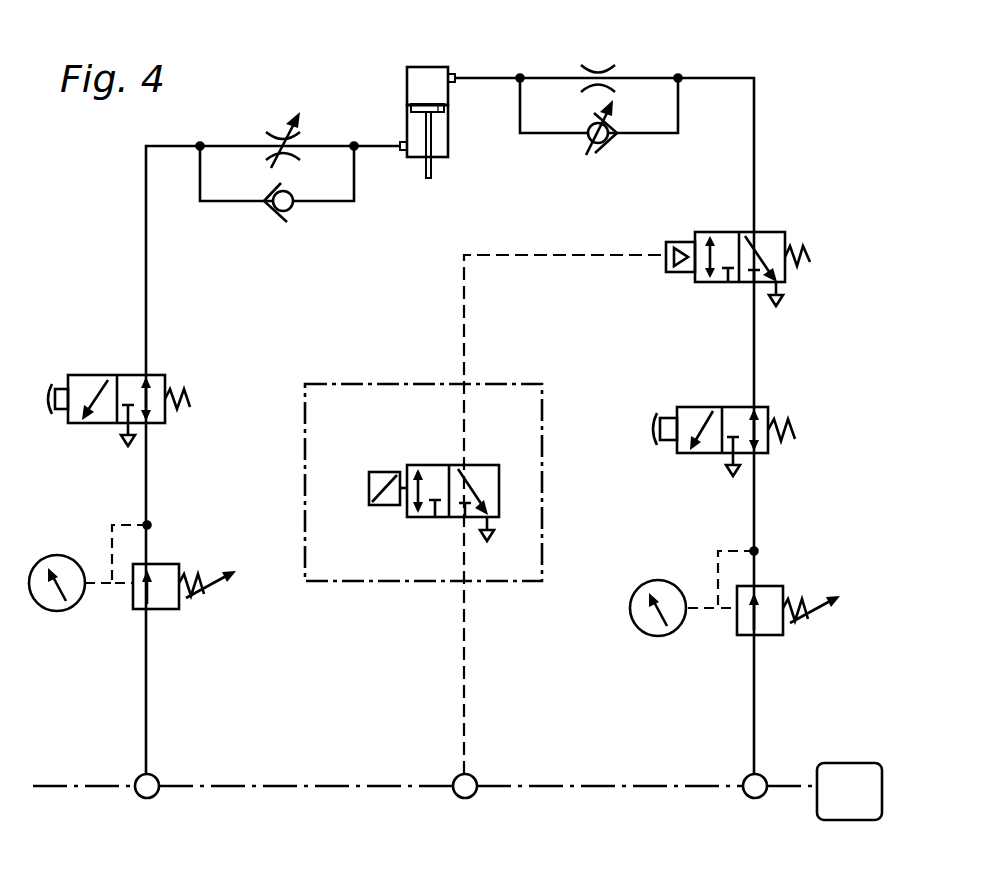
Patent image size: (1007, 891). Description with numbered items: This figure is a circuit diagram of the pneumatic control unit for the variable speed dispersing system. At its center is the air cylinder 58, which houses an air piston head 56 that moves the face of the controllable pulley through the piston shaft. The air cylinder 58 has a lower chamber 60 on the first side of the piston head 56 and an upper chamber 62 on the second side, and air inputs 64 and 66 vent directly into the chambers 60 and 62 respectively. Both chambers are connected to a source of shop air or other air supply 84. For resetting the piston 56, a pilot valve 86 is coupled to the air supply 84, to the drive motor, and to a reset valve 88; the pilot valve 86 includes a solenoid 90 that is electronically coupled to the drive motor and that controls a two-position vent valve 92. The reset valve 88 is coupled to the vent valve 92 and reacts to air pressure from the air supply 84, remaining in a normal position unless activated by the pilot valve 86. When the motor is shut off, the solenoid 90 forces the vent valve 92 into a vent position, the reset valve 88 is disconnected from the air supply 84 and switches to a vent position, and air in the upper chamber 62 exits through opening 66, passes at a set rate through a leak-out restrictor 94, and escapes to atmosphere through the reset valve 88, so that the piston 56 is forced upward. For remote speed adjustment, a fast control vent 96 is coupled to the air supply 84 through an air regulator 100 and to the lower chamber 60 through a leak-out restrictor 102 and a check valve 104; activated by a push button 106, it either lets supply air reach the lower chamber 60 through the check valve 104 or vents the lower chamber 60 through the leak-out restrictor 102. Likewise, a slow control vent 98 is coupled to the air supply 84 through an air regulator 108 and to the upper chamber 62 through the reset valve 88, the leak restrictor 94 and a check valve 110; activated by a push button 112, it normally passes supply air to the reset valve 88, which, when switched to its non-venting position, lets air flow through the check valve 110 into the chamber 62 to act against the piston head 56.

The air piston head 56 is at (412, 108).
The air cylinder 58 is at (450, 158).
The lower chamber 60 is at (449, 137).
The upper chamber 62 is at (414, 80).
The air input 64 is at (401, 152).
The air input 66 is at (462, 70).
The air supply 84 is at (847, 763).
The pilot valve 86 is at (410, 384).
The reset valve 88 is at (719, 232).
The solenoid 90 is at (381, 474).
The two-position vent valve 92 is at (433, 465).
The leak-out restrictor 94 is at (590, 68).
The fast control vent 96 is at (93, 375).
The slow control vent 98 is at (766, 407).
The air regulator 100 is at (85, 552).
The leak-out restrictor 102 is at (273, 138).
The check valve 104 is at (290, 210).
The push button 106 is at (53, 393).
The air regulator 108 is at (690, 575).
The check valve 110 is at (610, 143).
The push button 112 is at (659, 423).